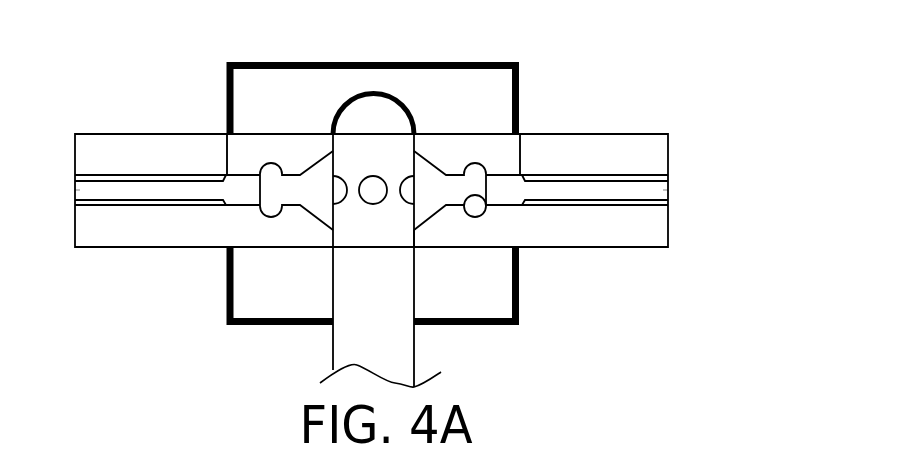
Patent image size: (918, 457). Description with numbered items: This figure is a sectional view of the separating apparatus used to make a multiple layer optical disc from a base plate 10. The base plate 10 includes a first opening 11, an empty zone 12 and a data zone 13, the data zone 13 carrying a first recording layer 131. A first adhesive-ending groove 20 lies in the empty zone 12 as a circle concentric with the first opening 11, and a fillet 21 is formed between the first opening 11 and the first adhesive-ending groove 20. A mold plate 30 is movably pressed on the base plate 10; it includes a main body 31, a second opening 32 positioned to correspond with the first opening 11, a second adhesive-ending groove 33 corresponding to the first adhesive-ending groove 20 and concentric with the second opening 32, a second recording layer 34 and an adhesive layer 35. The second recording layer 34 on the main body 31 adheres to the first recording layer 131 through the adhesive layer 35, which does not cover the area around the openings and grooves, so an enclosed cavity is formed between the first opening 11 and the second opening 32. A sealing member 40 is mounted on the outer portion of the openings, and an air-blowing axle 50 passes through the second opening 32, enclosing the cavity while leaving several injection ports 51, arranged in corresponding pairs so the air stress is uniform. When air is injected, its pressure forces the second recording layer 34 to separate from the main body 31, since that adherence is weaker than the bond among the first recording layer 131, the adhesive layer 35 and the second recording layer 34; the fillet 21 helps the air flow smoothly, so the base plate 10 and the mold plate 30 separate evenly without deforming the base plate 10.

The base plate 10 is at (672, 158).
The first opening 11 is at (430, 134).
The empty zone 12 is at (500, 138).
The data zone 13 is at (616, 152).
The first recording layer 131 is at (670, 181).
The first adhesive-ending groove 20 is at (476, 174).
The fillet 21 is at (313, 165).
The mold plate 30 is at (672, 234).
The main body 31 is at (583, 237).
The second opening 32 is at (414, 233).
The second adhesive-ending groove 33 is at (475, 214).
The second recording layer 34 is at (670, 201).
The adhesive layer 35 is at (670, 190).
The sealing member 40 is at (443, 73).
The air-blowing axle 50 is at (372, 107).
The injection ports 51 is at (368, 183).